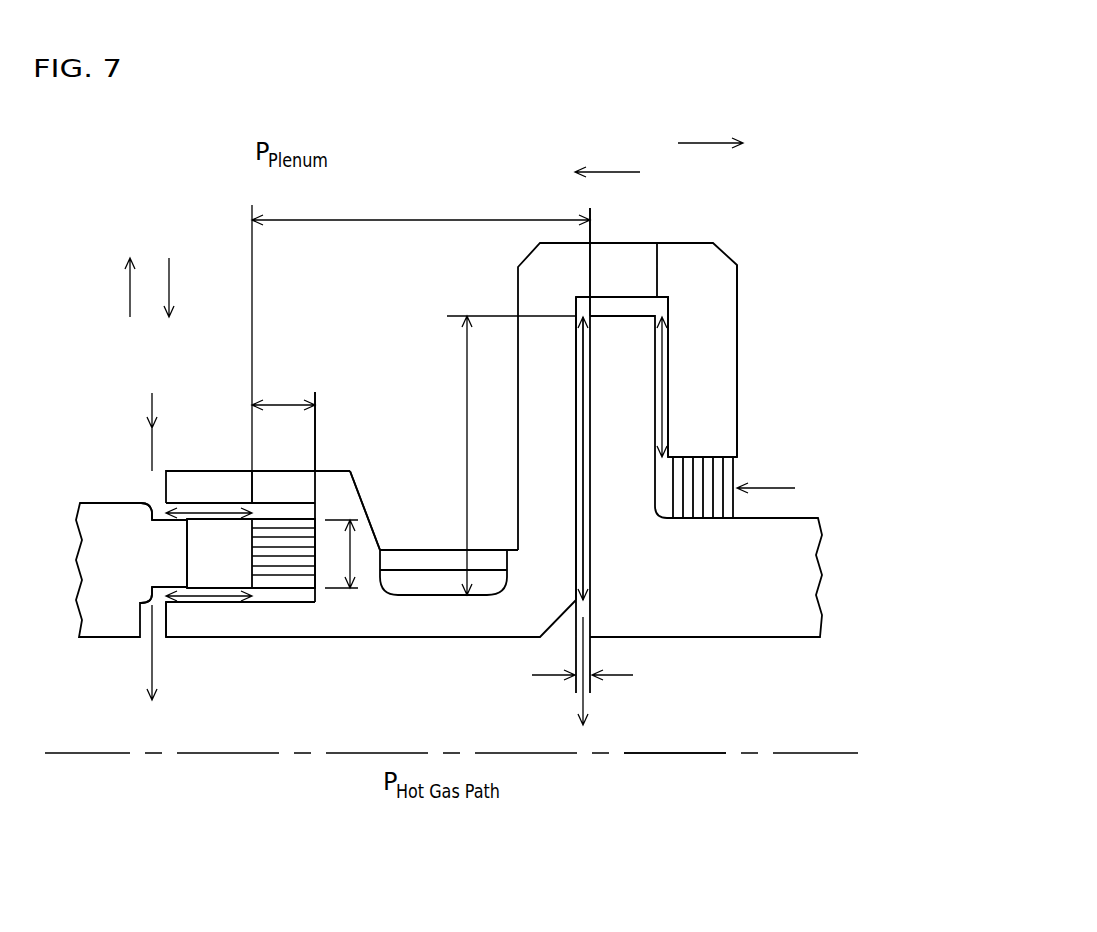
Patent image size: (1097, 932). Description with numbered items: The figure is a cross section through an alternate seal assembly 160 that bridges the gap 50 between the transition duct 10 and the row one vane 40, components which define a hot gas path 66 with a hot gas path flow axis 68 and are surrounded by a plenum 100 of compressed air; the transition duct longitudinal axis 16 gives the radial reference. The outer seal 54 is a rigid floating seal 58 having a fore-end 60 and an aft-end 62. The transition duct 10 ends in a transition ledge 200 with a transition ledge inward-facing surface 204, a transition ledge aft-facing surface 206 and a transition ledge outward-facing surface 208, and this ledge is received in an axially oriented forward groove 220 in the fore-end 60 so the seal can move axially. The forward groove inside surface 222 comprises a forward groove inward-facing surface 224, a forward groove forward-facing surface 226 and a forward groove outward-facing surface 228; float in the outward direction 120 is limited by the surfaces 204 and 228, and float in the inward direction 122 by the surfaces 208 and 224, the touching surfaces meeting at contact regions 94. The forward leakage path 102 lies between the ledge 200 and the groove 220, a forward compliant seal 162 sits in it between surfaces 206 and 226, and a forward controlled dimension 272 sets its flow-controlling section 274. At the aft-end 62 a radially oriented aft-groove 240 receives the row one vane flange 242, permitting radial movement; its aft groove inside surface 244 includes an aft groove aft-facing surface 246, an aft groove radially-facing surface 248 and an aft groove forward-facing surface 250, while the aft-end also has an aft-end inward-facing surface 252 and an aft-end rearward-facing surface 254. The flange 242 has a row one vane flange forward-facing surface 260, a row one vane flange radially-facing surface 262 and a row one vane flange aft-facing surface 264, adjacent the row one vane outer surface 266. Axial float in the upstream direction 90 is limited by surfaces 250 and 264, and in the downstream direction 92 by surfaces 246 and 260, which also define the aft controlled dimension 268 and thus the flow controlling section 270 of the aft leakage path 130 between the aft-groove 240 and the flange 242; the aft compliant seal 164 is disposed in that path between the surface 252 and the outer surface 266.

The transition duct 10 is at (107, 578).
The transition duct longitudinal axis 16 is at (675, 774).
The row one vane 40 is at (798, 578).
The gap 50 is at (418, 220).
The outer seal 54 is at (460, 451).
The floating seal 58 is at (460, 451).
The fore-end 60 is at (340, 471).
The aft-end 62 is at (655, 243).
The hot gas path 66 is at (749, 733).
The hot gas path flow axis 68 is at (640, 753).
The upstream direction 90 is at (623, 174).
The downstream direction 92 is at (696, 145).
The contact region 94 is at (186, 518).
The plenum 100 is at (233, 162).
The forward leakage path 102 is at (152, 405).
The outward direction 120 is at (127, 303).
The inward direction 122 is at (165, 273).
The aft leakage path 130 is at (767, 488).
The seal assembly 160 is at (392, 307).
The forward compliant seal 162 is at (285, 550).
The aft compliant seal 164 is at (697, 490).
The transition ledge 200 is at (692, 42).
The transition ledge inward-facing surface 204 is at (157, 592).
The transition ledge aft-facing surface 206 is at (252, 585).
The transition ledge outward-facing surface 208 is at (157, 512).
The forward groove 220 is at (274, 602).
The forward groove inside surface 222 is at (315, 512).
The forward groove inward-facing surface 224 is at (210, 503).
The forward groove forward-facing surface 226 is at (305, 585).
The forward groove outward-facing surface 228 is at (274, 603).
The aft-groove 240 is at (613, 307).
The row one vane flange 242 is at (623, 383).
The aft groove inside surface 244 is at (667, 357).
The aft groove aft-facing surface 246 is at (577, 463).
The aft groove radially-facing surface 248 is at (653, 300).
The aft groove forward-facing surface 250 is at (668, 427).
The aft-end inward-facing surface 252 is at (687, 458).
The aft-end rearward-facing surface 254 is at (738, 358).
The row one vane flange forward-facing surface 260 is at (588, 415).
The row one vane flange radially-facing surface 262 is at (625, 333).
The row one vane flange aft-facing surface 264 is at (655, 403).
The row one vane outer surface 266 is at (807, 520).
The aft controlled dimension 268 is at (612, 677).
The flow controlling section 270 is at (466, 420).
The forward controlled dimension 272 is at (282, 405).
The flow-controlling section 274 is at (350, 555).